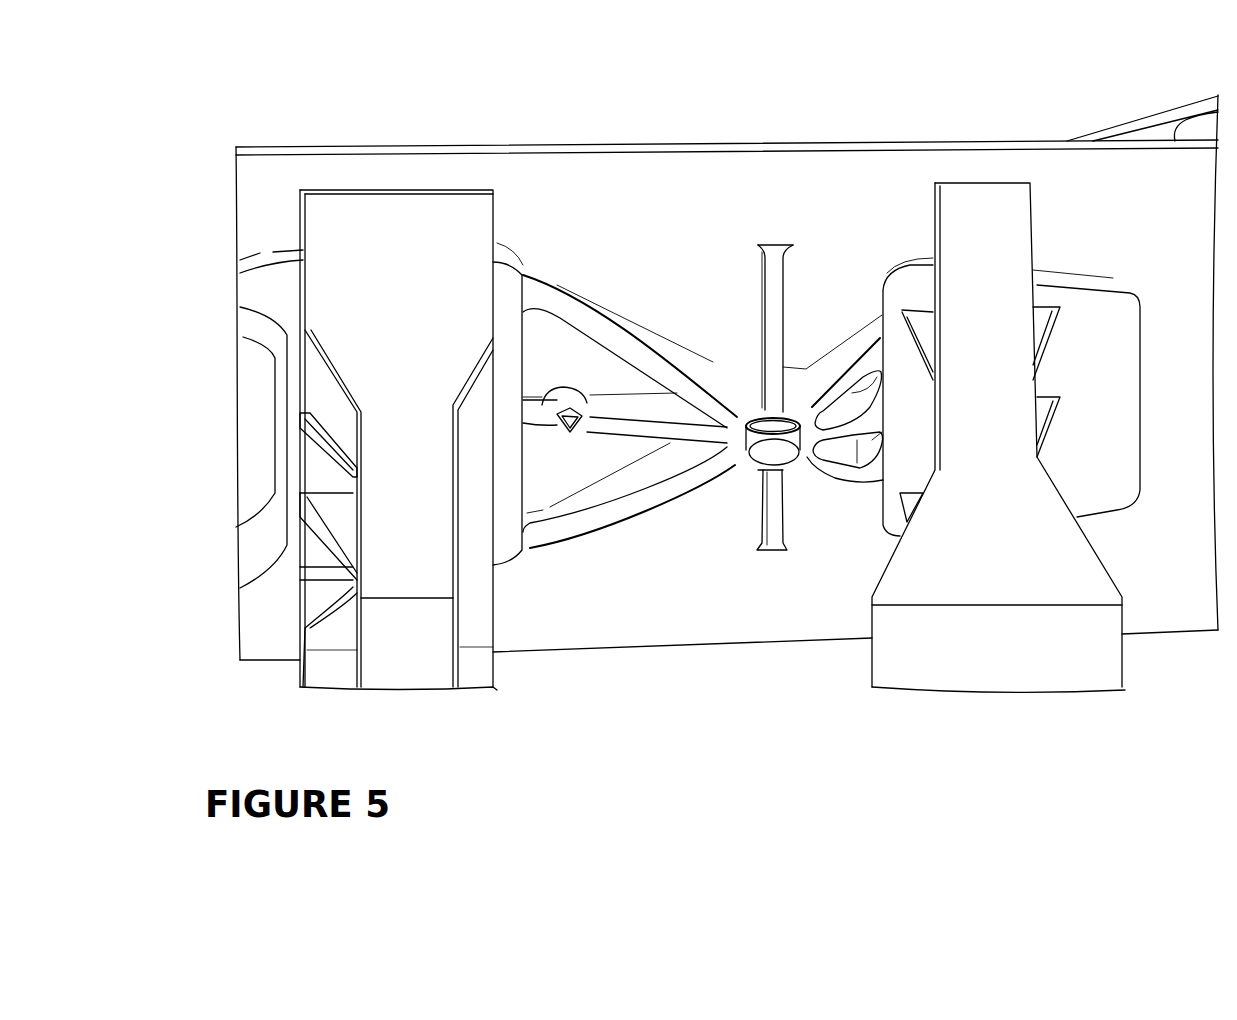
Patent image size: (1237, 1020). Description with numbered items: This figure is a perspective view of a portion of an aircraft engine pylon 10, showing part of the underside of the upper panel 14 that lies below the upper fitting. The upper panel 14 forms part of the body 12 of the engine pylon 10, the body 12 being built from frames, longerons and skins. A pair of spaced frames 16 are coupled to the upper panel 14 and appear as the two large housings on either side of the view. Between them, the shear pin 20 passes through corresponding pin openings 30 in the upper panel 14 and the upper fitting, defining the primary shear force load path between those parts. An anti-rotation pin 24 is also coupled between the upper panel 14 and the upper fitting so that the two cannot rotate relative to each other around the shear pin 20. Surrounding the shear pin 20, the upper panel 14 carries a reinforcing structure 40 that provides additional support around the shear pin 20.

The engine pylon 10 is at (348, 117).
The body 12 is at (437, 146).
The upper panel 14 is at (502, 147).
The spaced frames 16 is at (353, 245).
The shear pin 20 is at (780, 447).
The anti-rotation pin 24 is at (570, 423).
The pin openings 30 is at (772, 455).
The reinforcing structure 40 is at (773, 343).